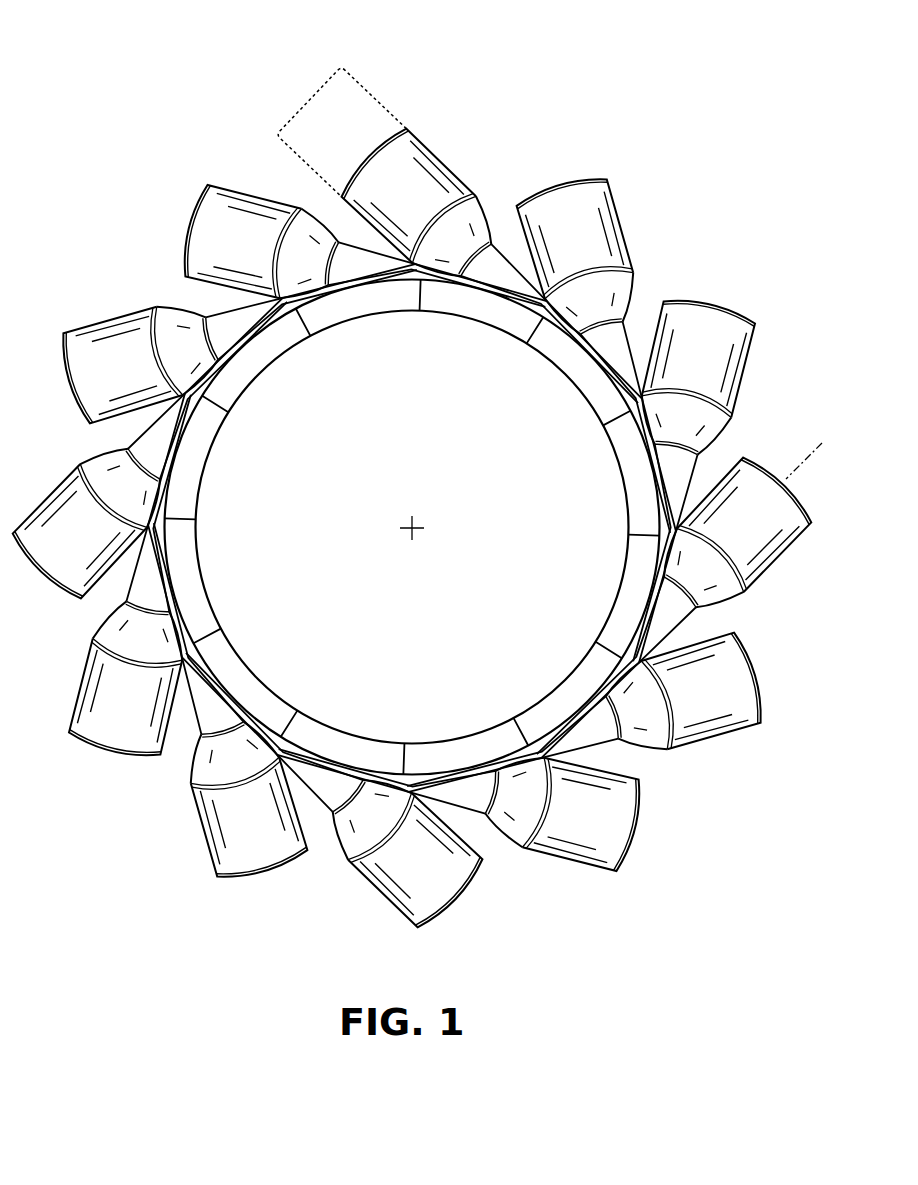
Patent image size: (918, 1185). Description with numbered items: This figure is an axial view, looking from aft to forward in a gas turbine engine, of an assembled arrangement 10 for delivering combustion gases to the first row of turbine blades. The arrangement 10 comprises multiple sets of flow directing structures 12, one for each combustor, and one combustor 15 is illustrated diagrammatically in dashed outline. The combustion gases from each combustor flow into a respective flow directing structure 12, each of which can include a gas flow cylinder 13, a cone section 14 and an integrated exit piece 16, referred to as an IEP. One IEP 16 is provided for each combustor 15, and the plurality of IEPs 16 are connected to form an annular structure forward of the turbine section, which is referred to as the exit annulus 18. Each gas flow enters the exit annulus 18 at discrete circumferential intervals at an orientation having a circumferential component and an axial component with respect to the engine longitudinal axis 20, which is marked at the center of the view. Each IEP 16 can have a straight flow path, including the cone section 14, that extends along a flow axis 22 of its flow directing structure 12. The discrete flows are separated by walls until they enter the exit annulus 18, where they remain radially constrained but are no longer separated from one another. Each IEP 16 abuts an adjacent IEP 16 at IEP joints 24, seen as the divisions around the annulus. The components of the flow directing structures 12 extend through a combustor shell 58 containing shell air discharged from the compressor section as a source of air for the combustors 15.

The arrangement 10 is at (262, 107).
The flow directing structure 12 is at (465, 160).
The gas flow cylinder 13 is at (433, 147).
The cone section 14 is at (483, 213).
The combustor 15 is at (302, 78).
The integrated exit piece 16 is at (498, 240).
The exit annulus 18 is at (371, 730).
The gas turbine engine longitudinal axis 20 is at (416, 532).
The flow axis 22 is at (793, 468).
The IEP joint 24 is at (640, 534).
The combustor shell 58 is at (102, 187).